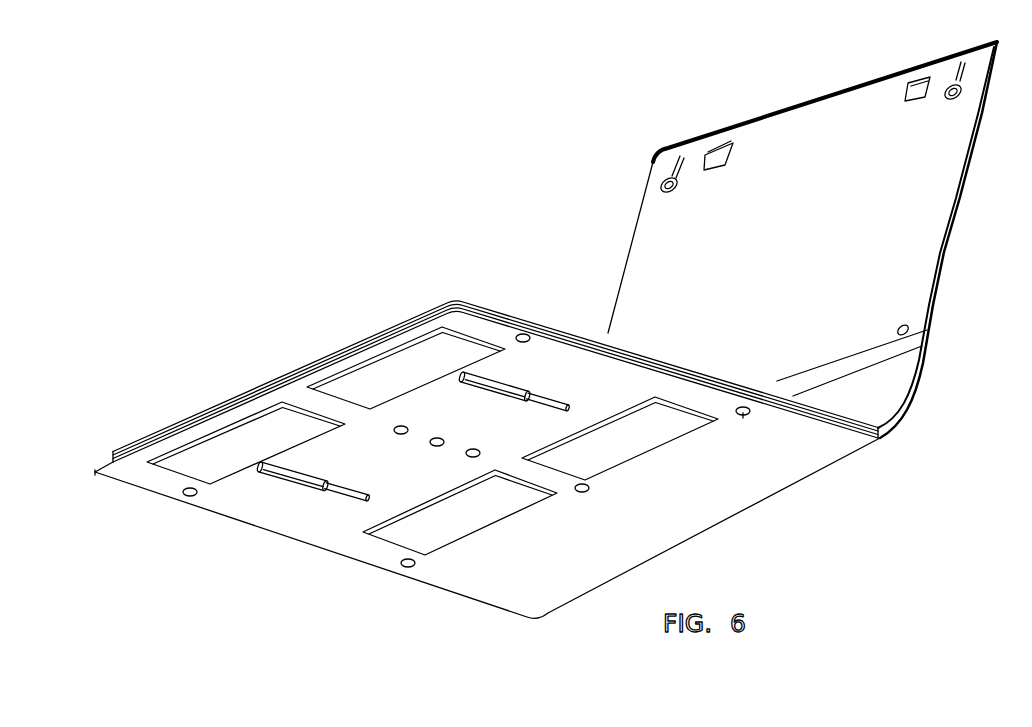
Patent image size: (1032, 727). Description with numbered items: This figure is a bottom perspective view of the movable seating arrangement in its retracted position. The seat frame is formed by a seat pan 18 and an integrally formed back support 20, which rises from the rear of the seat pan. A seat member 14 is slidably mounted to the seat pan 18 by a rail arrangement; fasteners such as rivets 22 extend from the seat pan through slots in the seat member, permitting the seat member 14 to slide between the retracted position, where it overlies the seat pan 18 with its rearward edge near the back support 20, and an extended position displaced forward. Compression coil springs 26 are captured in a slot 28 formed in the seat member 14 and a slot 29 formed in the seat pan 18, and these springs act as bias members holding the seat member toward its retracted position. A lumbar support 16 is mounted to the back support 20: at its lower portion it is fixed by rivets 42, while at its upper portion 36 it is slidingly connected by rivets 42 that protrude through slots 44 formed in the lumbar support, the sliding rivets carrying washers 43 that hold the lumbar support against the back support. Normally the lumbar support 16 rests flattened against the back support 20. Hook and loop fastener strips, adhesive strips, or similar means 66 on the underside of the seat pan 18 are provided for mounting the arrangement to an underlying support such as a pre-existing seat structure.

The seat member 14 is at (268, 381).
The lumbar support 16 is at (797, 132).
The seat pan 18 is at (465, 573).
The back support 20 is at (967, 197).
The rivets 22 is at (744, 415).
The compression coil springs 26 is at (545, 390).
The slot 28 is at (497, 375).
The slot 29 is at (278, 467).
The upper portion 36 is at (907, 100).
The rivets 42 is at (662, 181).
The washers 43 is at (681, 181).
The slots 44 is at (667, 156).
The fastener strips 66 is at (649, 431).